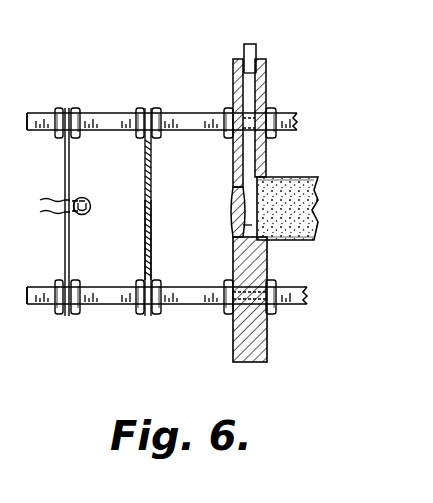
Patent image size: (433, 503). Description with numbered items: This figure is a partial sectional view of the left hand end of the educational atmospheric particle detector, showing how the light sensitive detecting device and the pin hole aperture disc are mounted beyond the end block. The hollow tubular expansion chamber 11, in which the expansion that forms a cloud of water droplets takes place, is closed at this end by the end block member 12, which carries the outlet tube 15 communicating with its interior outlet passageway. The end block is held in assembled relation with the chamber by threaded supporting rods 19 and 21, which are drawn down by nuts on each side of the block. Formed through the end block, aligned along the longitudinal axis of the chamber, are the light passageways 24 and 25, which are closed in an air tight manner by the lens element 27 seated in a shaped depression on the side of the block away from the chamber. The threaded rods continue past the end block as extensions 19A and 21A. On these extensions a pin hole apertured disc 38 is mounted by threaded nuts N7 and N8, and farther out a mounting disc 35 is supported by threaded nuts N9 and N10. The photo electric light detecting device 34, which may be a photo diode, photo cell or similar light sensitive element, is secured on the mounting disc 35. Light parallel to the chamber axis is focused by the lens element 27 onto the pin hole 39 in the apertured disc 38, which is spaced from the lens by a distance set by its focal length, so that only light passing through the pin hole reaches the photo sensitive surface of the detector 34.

The tubular expansion chamber 11 is at (290, 177).
The end block member 12 is at (268, 264).
The outlet tube 15 is at (256, 48).
The threaded supporting rod 19 is at (309, 122).
The extension of threaded supporting rod 19A is at (44, 117).
The threaded supporting rod 21 is at (320, 292).
The extension of threaded supporting rod 21A is at (42, 294).
The light passageway 24 is at (256, 80).
The light passageway 25 is at (240, 228).
The lens element 27 is at (232, 194).
The photo electric light detecting device 34 is at (96, 192).
The mounting disc 35 is at (70, 251).
The pin hole apertured disc 38 is at (152, 176).
The pin hole 39 is at (156, 210).
The threaded nut N7 is at (168, 326).
The threaded nut N8 is at (136, 330).
The threaded nut N9 is at (90, 330).
The threaded nut N10 is at (57, 330).